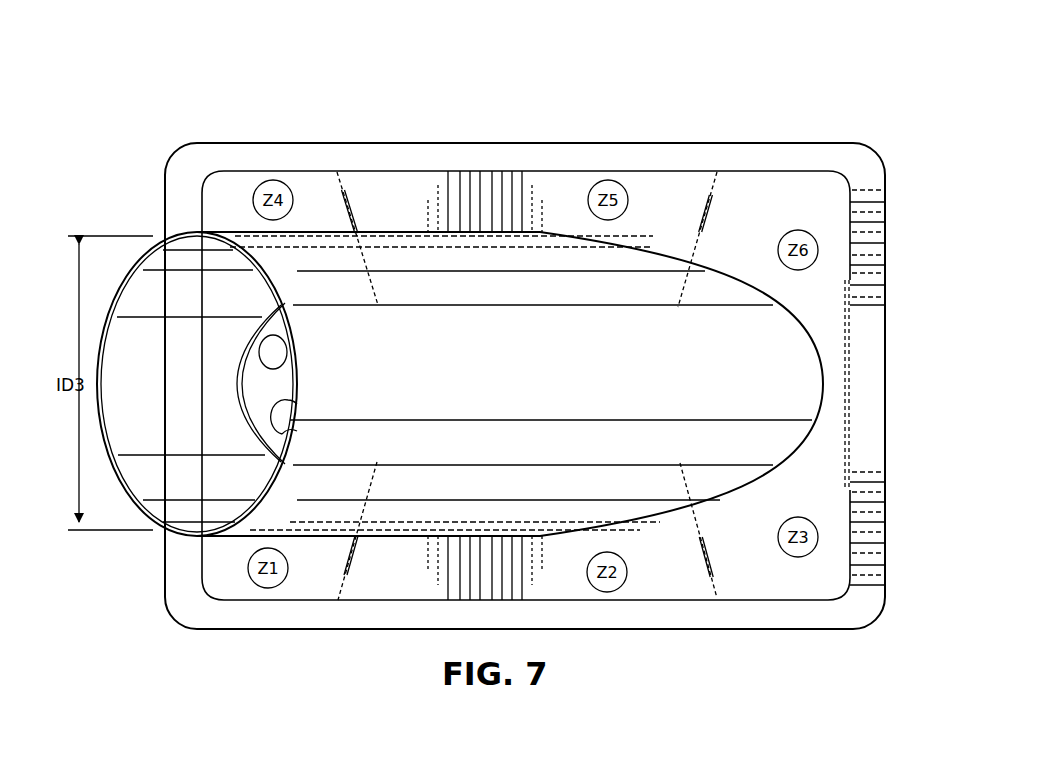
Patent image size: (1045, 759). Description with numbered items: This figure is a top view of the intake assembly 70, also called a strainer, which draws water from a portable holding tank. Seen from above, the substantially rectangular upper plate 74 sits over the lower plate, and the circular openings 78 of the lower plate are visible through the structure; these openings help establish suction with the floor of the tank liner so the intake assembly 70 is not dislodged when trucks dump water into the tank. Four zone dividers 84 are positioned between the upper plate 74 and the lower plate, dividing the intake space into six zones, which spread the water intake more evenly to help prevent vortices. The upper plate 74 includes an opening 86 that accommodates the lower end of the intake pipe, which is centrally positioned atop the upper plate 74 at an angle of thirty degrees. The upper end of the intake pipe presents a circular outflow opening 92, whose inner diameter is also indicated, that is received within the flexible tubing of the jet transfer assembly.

The intake assembly 70 is at (850, 97).
The upper plate 74 is at (805, 215).
The circular openings 78 is at (282, 416).
The zone dividers 84 is at (357, 208).
The opening 86 is at (277, 309).
The circular outflow opening 92 is at (106, 328).